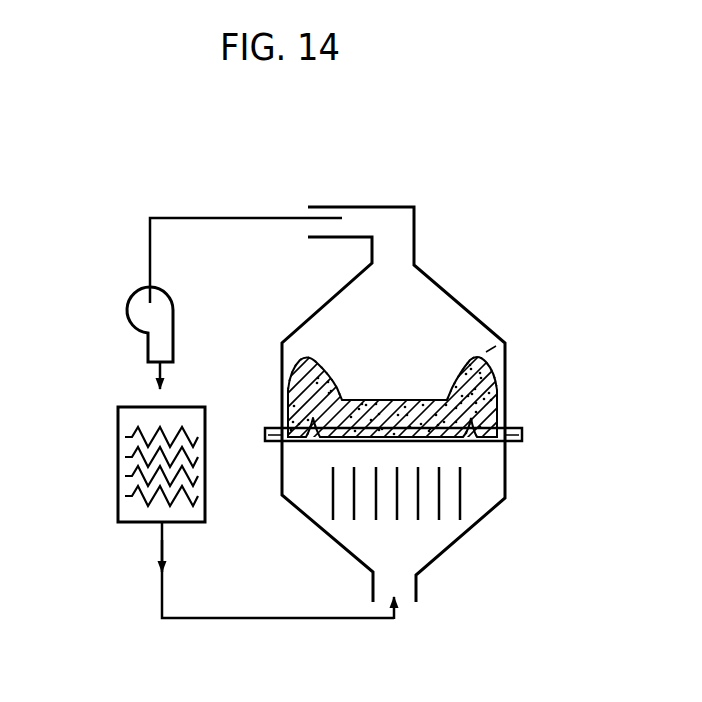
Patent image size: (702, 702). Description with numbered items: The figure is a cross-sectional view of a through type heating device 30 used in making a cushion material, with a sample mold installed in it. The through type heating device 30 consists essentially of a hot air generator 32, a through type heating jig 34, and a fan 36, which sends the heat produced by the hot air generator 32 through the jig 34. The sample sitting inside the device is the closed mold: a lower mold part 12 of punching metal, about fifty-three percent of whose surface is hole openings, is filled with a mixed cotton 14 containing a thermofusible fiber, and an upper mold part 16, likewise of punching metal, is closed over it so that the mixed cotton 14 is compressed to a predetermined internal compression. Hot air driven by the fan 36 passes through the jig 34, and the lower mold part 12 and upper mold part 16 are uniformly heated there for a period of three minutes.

The through type heating device 30 is at (528, 222).
The fan 36 is at (128, 314).
The hot air generator 32 is at (118, 507).
The lower mold part 12 is at (497, 441).
The mixed cotton 14 is at (497, 386).
The upper mold part 16 is at (474, 360).
The through type heating jig 34 is at (505, 484).